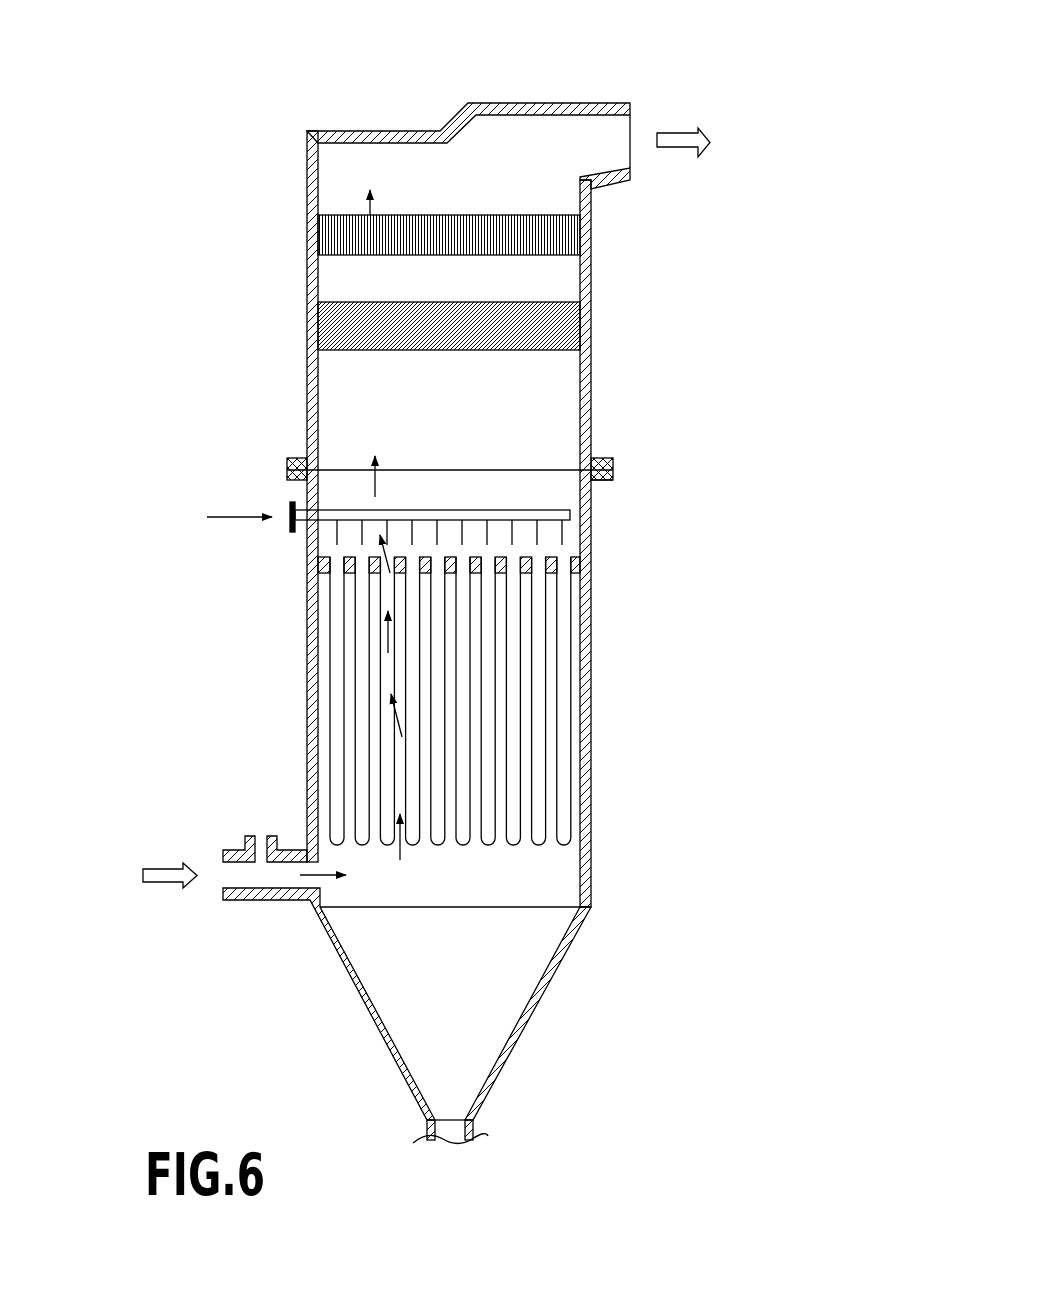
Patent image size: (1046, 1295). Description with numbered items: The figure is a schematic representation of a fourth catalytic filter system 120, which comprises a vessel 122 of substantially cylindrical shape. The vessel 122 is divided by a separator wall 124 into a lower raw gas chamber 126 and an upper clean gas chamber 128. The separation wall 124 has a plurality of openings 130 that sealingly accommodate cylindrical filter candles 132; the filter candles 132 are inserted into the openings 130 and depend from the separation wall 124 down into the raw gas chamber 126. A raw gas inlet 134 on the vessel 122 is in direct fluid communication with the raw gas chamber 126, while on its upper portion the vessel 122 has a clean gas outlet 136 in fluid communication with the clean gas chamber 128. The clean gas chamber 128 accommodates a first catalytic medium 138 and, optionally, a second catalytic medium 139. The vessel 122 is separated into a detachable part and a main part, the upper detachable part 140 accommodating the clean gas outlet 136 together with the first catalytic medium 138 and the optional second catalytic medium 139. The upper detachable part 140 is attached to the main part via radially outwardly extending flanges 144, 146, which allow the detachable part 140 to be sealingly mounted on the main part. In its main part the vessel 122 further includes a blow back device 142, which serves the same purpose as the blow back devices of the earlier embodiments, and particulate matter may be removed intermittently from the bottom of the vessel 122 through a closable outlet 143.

The catalytic filter system 120 is at (704, 385).
The vessel 122 is at (607, 628).
The separator wall 124 is at (590, 557).
The raw gas chamber 126 is at (558, 868).
The clean gas chamber 128 is at (552, 396).
The openings 130 is at (356, 551).
The cylindrical filter candles 132 is at (564, 736).
The raw gas inlet 134 is at (268, 914).
The clean gas outlet 136 is at (594, 90).
The first catalytic medium 138 is at (307, 325).
The second catalytic medium 139 is at (590, 228).
The upper detachable part 140 is at (293, 168).
The blow back device 142 is at (297, 503).
The closable outlet 143 is at (478, 1132).
The flange 144 is at (608, 481).
The flange 146 is at (613, 456).